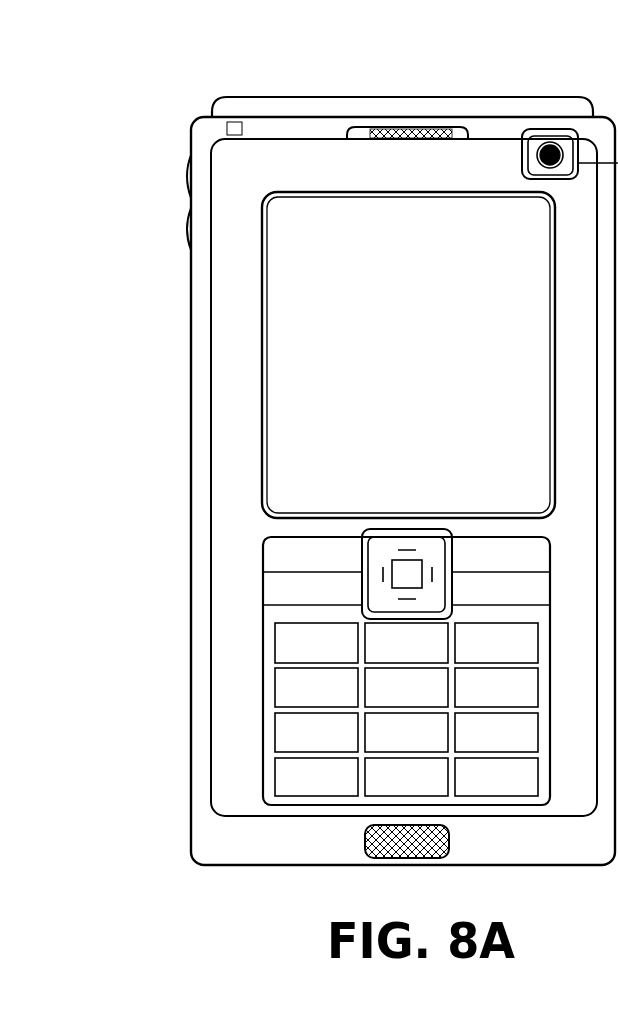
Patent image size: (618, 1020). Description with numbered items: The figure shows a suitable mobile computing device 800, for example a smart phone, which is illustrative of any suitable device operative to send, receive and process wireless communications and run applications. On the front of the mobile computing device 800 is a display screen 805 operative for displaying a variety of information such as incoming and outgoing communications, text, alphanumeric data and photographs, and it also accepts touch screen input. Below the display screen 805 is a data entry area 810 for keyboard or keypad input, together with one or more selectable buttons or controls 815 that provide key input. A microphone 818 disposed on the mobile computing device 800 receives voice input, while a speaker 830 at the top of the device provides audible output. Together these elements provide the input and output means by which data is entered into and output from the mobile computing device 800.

The mobile computing device 800 is at (182, 122).
The speaker 830 is at (453, 128).
The display screen 805 is at (300, 337).
The data entry area 810 is at (265, 583).
The selectable buttons or controls 815 is at (287, 685).
The microphone 818 is at (365, 833).